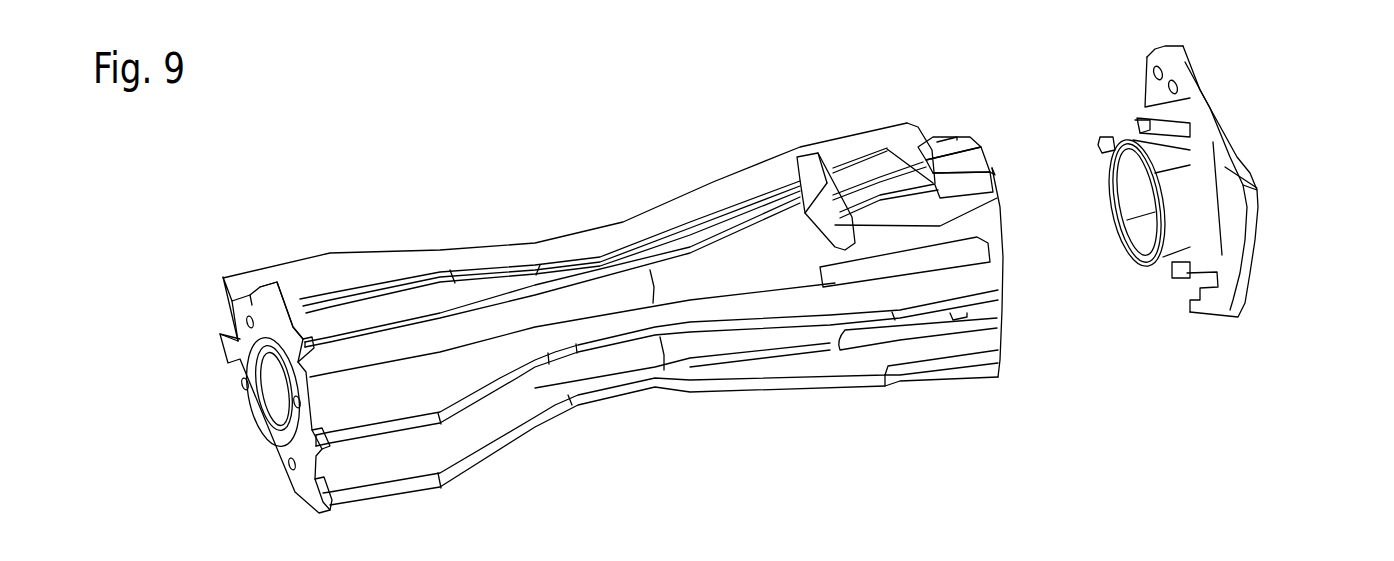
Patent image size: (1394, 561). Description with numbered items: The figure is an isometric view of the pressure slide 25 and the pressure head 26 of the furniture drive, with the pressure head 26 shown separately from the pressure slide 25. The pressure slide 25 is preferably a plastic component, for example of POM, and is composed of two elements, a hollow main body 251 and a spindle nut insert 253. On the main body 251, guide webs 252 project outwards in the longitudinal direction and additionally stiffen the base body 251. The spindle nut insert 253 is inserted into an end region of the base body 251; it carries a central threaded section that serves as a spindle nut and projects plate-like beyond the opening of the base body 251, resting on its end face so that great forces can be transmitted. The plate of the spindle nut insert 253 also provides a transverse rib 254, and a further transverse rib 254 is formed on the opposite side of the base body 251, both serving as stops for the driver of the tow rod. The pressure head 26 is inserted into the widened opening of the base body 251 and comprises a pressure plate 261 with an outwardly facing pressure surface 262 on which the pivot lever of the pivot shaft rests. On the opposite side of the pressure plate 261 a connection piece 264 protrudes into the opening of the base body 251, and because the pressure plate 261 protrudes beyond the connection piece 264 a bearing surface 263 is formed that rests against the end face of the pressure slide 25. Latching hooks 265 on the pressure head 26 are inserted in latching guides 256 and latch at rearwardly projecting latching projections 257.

The pressure slide 25 is at (402, 165).
The main body 251 is at (575, 302).
The guide webs 252 is at (657, 397).
The spindle nut insert 253 is at (264, 394).
The transverse rib 254 is at (277, 297).
The latching guides 256 is at (970, 157).
The latching projections 257 is at (895, 160).
The pressure head 26 is at (1303, 303).
The pressure plate 261 is at (1248, 207).
The pressure surface 262 is at (1256, 120).
The bearing surface 263 is at (1155, 95).
The connection piece 264 is at (1128, 243).
The latching hooks 265 is at (1142, 337).